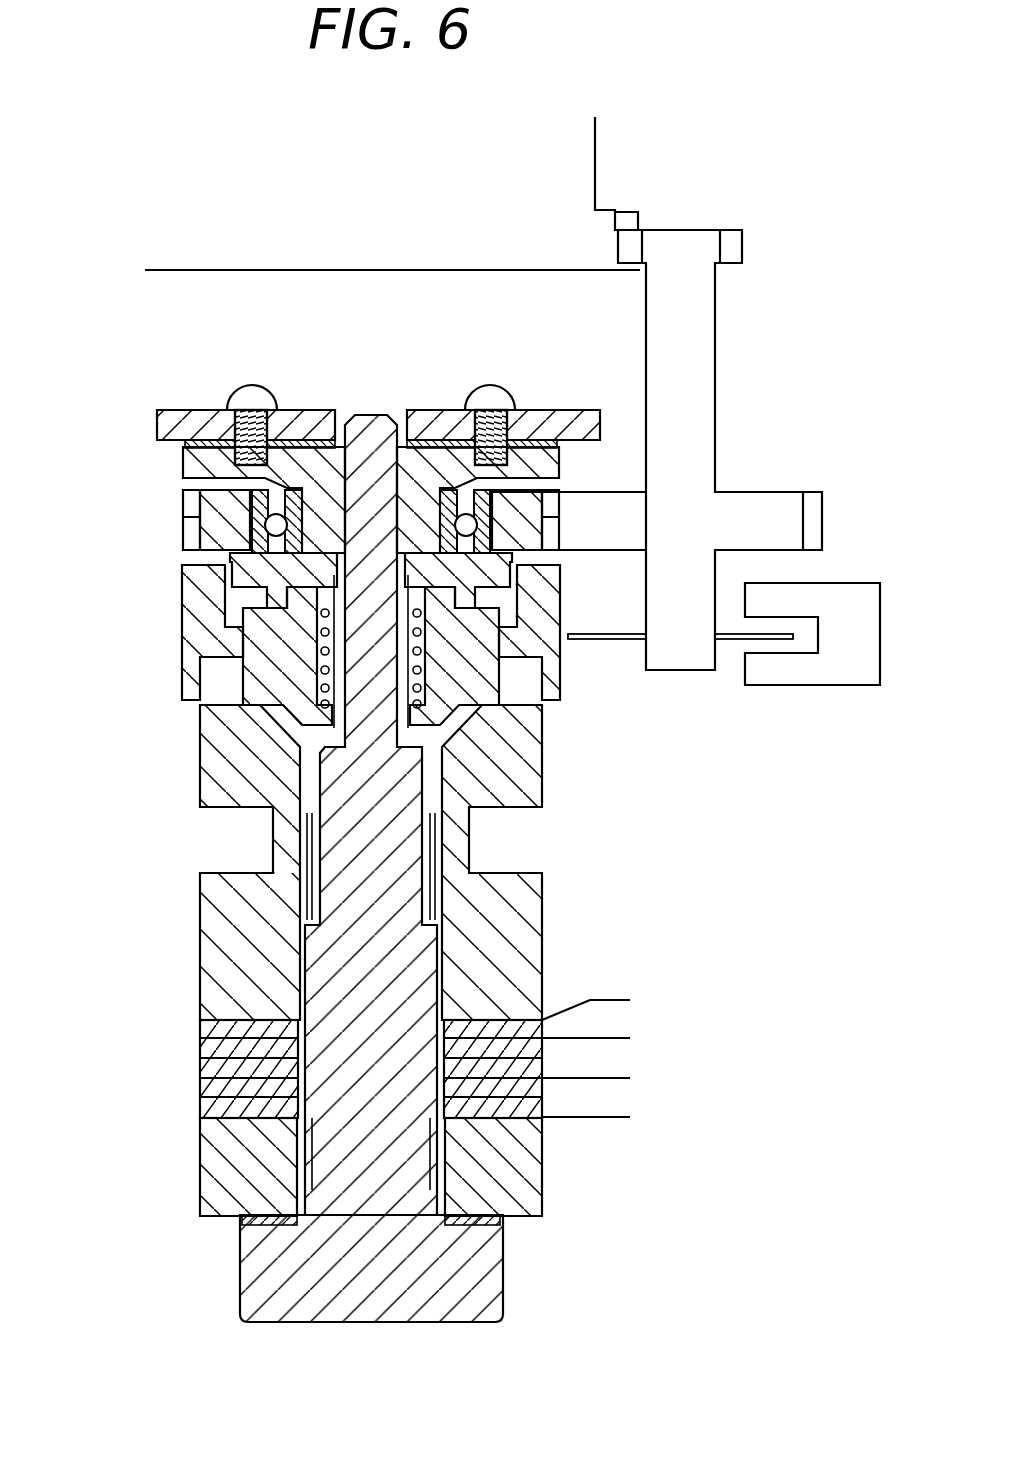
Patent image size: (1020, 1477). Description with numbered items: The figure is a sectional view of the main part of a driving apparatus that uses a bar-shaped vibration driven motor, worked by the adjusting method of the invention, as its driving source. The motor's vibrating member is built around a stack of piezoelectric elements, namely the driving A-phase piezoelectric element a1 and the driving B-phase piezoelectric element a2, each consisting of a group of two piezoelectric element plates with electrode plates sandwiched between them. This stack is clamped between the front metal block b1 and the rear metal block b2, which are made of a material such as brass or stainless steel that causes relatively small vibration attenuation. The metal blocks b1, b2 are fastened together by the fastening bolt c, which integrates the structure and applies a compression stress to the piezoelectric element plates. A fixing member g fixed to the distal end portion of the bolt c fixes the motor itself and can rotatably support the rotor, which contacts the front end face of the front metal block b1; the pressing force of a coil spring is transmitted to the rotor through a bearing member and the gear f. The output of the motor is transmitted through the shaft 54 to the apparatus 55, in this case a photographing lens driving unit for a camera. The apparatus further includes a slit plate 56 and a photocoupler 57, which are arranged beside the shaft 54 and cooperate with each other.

The shaft 54 is at (700, 401).
The apparatus 55 is at (580, 150).
The slit plate 56 is at (612, 641).
The photocoupler 57 is at (777, 673).
The fixing member g is at (203, 455).
The gear f is at (200, 515).
The front metal block b1 is at (220, 745).
The metal block b2 is at (218, 1152).
The driving A-phase piezoelectric element a1 is at (150, 1012).
The driving B-phase piezoelectric element a2 is at (363, 1059).
The fastening bolt c is at (487, 1268).